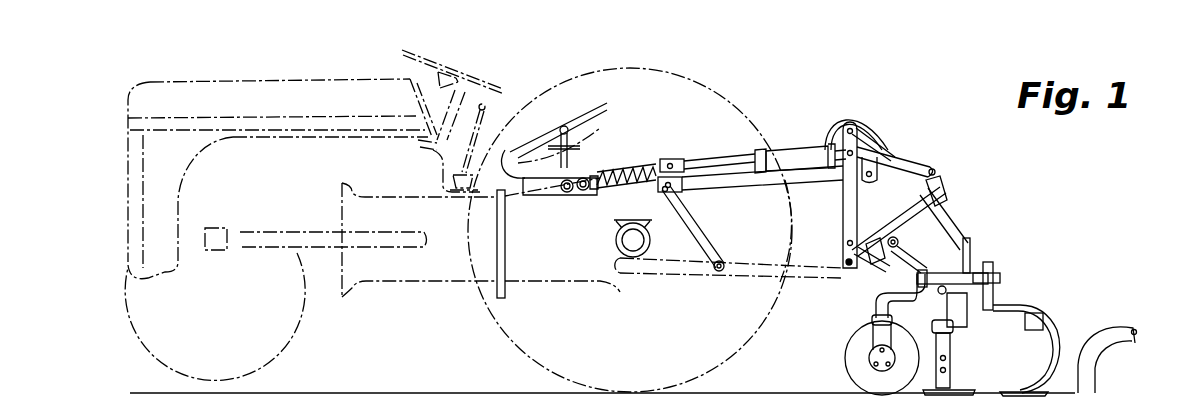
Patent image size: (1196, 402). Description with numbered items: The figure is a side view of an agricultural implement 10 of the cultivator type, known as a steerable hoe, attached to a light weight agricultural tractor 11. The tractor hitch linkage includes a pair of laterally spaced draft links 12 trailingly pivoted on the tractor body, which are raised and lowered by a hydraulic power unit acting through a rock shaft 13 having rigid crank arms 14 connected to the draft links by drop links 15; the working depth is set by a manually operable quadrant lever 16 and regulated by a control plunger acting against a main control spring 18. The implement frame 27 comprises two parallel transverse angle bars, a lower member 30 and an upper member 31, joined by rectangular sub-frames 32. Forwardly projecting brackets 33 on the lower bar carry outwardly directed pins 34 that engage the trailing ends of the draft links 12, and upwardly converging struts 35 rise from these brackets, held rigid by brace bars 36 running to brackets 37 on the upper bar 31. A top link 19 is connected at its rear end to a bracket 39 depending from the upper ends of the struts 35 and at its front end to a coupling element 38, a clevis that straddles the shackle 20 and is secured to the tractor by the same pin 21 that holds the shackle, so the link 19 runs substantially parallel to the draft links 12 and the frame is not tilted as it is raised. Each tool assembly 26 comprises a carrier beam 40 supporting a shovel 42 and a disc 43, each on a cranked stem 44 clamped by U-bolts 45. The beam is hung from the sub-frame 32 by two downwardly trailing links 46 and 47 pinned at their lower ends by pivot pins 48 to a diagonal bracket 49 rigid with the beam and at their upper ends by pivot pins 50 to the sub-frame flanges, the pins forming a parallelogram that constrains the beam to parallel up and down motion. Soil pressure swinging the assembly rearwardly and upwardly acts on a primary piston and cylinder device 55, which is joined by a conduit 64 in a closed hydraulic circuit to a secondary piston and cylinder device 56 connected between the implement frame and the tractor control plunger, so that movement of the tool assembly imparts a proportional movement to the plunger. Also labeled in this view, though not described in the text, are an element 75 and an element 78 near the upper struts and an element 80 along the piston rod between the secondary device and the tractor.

The agricultural implement 10 is at (983, 192).
The agricultural tractor 11 is at (531, 80).
The draft links 12 is at (735, 278).
The rock shaft 13 is at (590, 178).
The crank arms 14 is at (622, 172).
The drop links 15 is at (713, 235).
The quadrant lever 16 is at (598, 108).
The main control spring 18 is at (626, 196).
The top link 19 is at (797, 182).
The shackle 20 is at (667, 158).
The pin 21 is at (662, 190).
The tool assembly 26 is at (902, 282).
The frame 27 is at (892, 205).
The transverse member 30 is at (869, 258).
The transverse member 31 is at (940, 188).
The sub-frame 32 is at (895, 223).
The brackets 33 is at (850, 240).
The pin 34 is at (845, 258).
The struts 35 is at (843, 196).
The brace bars 36 is at (915, 166).
The brackets 37 is at (936, 168).
The coupling element 38 is at (686, 196).
The bracket 39 is at (873, 138).
The carrier beam 40 is at (990, 310).
The shovel 42 is at (950, 383).
The disc 43 is at (845, 361).
The cranked stem 44 is at (895, 306).
The U-bolts 45 is at (978, 262).
The link 46 is at (912, 257).
The link 47 is at (908, 262).
The pivot pins 48 is at (967, 246).
The bracket 49 is at (950, 308).
The pivot pins 50 is at (905, 243).
The primary piston and cylinder device 55 is at (900, 194).
The secondary piston and cylinder device 56 is at (814, 148).
The conduit 64 is at (855, 114).
The hydraulic cylinder 75 is at (762, 150).
The pin 78 is at (880, 152).
The piston rod 80 is at (722, 158).